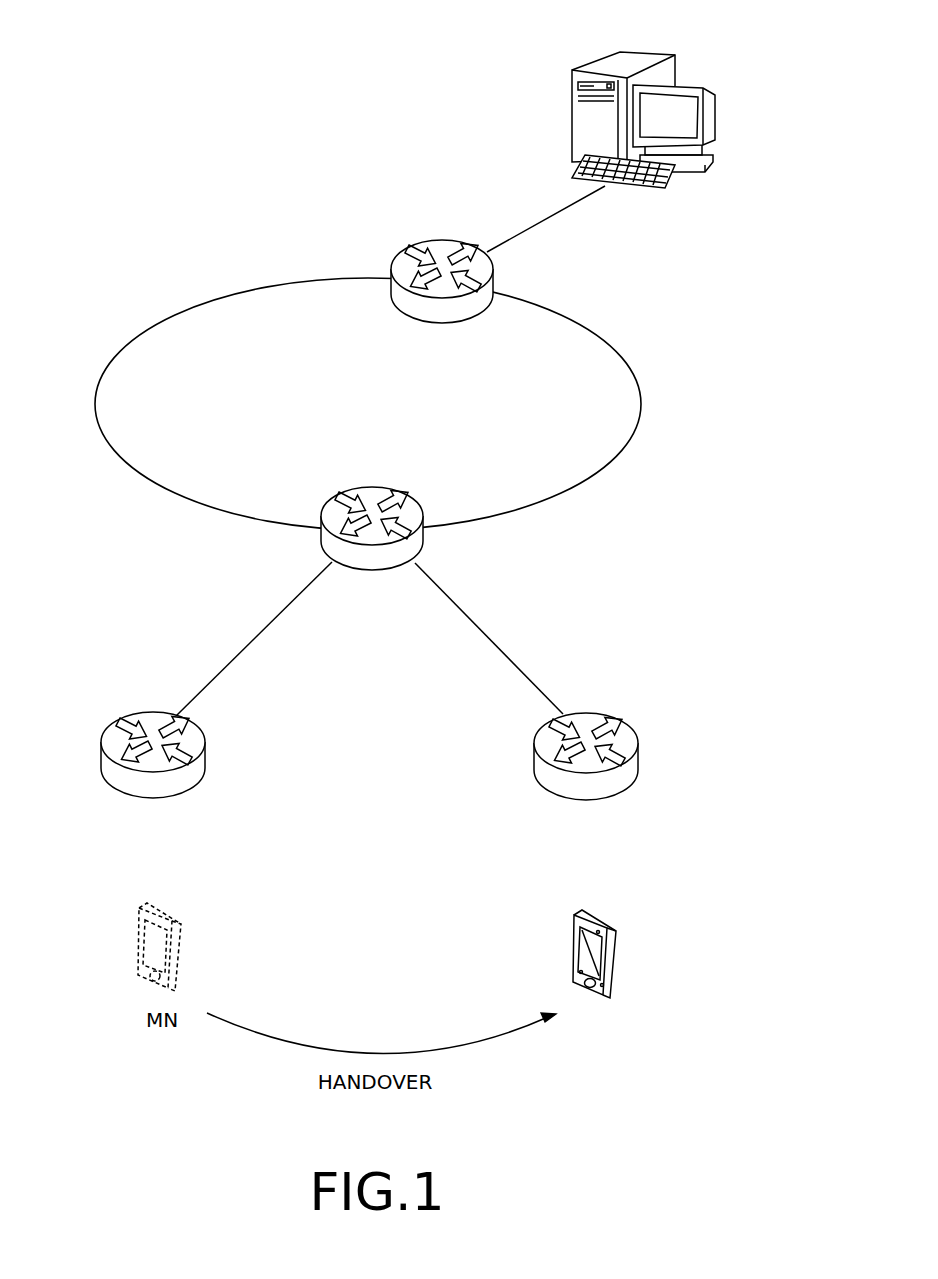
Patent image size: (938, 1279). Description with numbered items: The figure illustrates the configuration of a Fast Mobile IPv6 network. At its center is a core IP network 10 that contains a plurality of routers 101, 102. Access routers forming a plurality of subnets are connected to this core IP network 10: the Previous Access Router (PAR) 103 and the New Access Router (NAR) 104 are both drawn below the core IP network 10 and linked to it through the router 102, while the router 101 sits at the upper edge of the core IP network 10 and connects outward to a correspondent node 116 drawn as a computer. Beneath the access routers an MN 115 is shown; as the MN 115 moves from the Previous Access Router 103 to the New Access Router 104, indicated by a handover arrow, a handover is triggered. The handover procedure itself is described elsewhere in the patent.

The core IP network 10 is at (252, 288).
The router 101 is at (442, 240).
The router 102 is at (423, 541).
The Previous Access Router (PAR) 103 is at (205, 753).
The New Access Router (NAR) 104 is at (638, 757).
The MN (mobile node) 115 is at (618, 955).
The correspondent node 116 is at (653, 50).